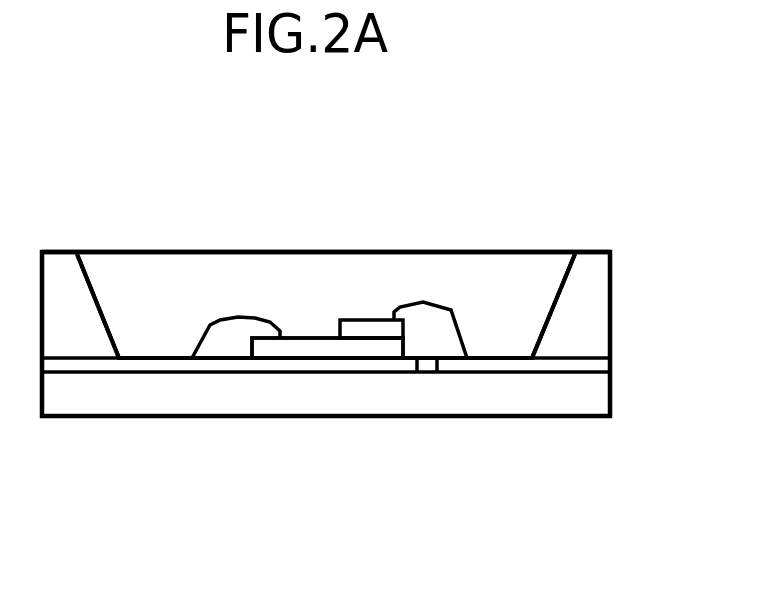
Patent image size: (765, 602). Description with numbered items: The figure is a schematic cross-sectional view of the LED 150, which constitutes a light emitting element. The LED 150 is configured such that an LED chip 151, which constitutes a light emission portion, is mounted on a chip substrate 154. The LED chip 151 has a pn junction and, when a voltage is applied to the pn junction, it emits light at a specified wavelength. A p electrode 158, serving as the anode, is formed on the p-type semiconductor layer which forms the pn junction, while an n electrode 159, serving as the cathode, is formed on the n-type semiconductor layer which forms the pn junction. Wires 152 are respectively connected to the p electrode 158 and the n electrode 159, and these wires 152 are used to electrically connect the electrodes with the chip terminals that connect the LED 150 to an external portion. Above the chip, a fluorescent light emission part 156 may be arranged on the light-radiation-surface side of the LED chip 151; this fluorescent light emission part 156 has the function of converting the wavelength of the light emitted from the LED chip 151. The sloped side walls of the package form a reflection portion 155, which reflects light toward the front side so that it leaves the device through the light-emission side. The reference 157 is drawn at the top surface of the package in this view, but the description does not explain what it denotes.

The LED 150 is at (272, 415).
The LED chip 151 is at (307, 337).
The wires 152 is at (207, 320).
The chip substrate 154 is at (353, 350).
The reflection portion 155 is at (93, 283).
The fluorescent light emission part 156 is at (143, 268).
The sealing member 157 is at (422, 250).
The p electrode 158 is at (365, 330).
The n electrode 159 is at (263, 348).